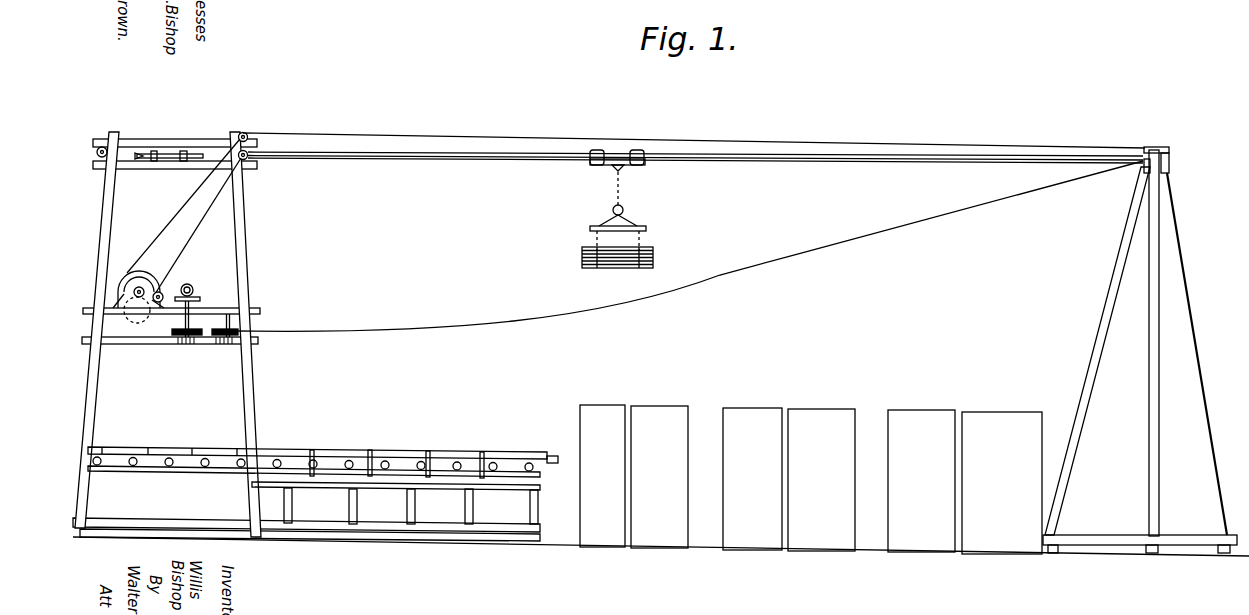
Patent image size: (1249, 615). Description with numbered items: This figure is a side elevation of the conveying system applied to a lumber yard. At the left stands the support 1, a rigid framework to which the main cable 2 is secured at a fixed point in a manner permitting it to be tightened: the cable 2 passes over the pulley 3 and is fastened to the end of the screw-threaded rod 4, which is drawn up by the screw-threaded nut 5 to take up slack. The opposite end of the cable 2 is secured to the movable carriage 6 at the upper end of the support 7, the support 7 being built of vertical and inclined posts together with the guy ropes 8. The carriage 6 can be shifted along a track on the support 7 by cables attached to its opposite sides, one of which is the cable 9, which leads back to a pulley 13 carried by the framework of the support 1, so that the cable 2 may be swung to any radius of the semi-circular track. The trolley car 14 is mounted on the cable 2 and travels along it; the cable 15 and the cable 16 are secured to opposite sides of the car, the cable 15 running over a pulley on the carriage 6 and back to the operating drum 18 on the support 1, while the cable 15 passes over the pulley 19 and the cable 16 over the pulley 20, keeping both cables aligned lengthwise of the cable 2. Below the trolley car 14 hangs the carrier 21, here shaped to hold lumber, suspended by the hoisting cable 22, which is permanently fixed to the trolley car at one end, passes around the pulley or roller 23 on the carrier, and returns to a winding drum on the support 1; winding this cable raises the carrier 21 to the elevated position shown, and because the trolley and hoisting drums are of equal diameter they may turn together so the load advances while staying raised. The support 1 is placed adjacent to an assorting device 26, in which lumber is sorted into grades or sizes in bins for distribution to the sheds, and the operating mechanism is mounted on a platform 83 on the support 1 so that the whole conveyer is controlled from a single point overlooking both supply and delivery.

The support 1 is at (247, 248).
The cable 2 is at (483, 151).
The pulley 3 is at (97, 150).
The screw-threaded rod 4 is at (160, 154).
The screw-threaded nut 5 is at (187, 151).
The movable carriage 6 is at (1129, 155).
The support 7 is at (1122, 227).
The guy ropes 8 is at (1208, 432).
The cable 9 is at (758, 268).
The pulley 13 is at (183, 340).
The trolley car 14 is at (613, 165).
The cable 15 is at (382, 118).
The cable 16 is at (510, 162).
The operating drum 18 is at (149, 273).
The pulley 19 is at (245, 133).
The pulley 20 is at (258, 164).
The carrier 21 is at (641, 230).
The cable 22 is at (608, 182).
The pulley or roller 23 is at (628, 211).
The assorting device 26 is at (345, 450).
The platform 83 is at (208, 308).